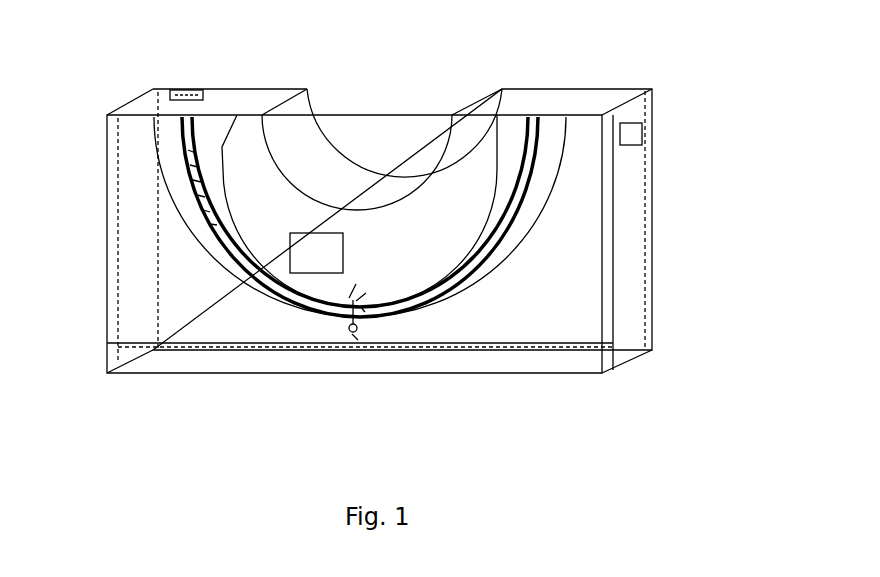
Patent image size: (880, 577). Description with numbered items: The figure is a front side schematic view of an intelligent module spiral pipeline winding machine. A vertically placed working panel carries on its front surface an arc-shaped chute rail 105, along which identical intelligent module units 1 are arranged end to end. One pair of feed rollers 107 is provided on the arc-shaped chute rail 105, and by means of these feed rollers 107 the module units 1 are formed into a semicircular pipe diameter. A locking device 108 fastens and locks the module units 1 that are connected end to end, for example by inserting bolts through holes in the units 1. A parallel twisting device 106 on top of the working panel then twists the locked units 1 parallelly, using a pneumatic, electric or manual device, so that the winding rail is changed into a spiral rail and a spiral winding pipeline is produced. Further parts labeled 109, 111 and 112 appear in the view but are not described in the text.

The intelligent module units 1 is at (197, 197).
The arc-shaped chute rail 105 is at (318, 310).
The parallel twisting device 106 is at (185, 97).
The feed rollers 107 is at (353, 330).
The locking device 108 is at (312, 250).
The power switch 109 is at (630, 140).
The heating layer 111 is at (222, 145).
The receiving groove 112 is at (185, 225).